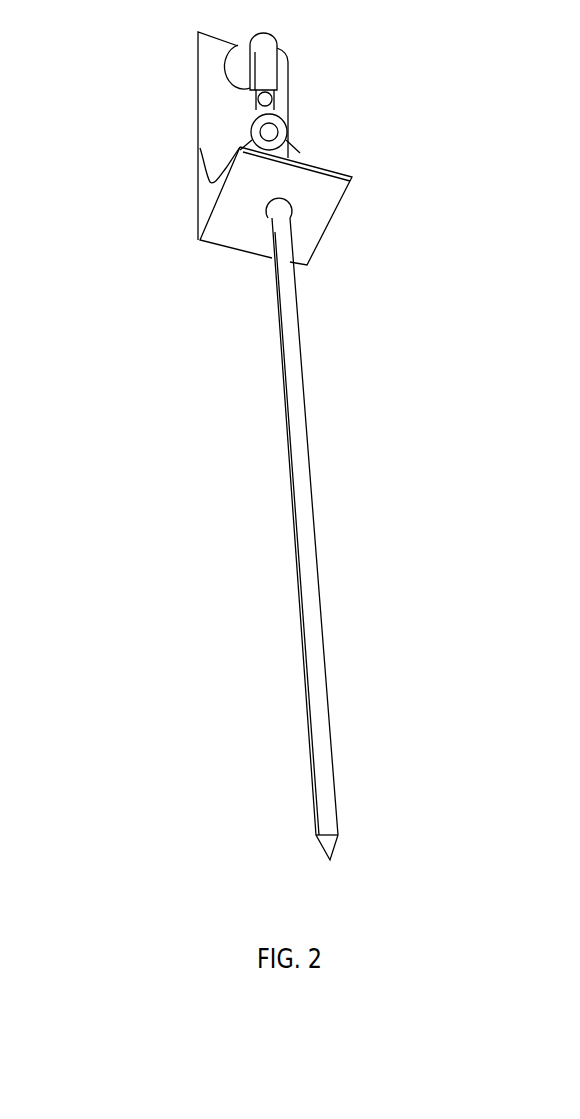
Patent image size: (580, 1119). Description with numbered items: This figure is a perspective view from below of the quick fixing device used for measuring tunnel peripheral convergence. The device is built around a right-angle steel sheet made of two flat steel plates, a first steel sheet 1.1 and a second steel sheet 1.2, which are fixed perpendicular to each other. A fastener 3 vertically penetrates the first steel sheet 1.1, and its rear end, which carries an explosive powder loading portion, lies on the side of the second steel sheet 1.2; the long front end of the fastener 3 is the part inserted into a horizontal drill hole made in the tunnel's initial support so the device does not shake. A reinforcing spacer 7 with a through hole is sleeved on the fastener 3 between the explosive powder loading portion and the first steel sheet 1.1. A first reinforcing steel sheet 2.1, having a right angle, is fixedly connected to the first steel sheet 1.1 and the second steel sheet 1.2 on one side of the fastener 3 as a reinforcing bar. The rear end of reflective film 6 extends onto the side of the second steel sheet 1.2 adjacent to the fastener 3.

The first steel sheet 1.1 is at (327, 225).
The second steel sheet 1.2 is at (210, 115).
The first reinforcing steel sheet 2.1 is at (203, 205).
The fastener 3 is at (323, 548).
The rear end of reflective film 6 is at (223, 60).
The reinforcing spacer 7 is at (290, 127).